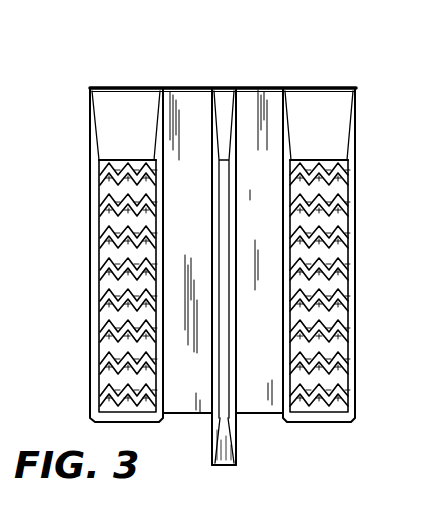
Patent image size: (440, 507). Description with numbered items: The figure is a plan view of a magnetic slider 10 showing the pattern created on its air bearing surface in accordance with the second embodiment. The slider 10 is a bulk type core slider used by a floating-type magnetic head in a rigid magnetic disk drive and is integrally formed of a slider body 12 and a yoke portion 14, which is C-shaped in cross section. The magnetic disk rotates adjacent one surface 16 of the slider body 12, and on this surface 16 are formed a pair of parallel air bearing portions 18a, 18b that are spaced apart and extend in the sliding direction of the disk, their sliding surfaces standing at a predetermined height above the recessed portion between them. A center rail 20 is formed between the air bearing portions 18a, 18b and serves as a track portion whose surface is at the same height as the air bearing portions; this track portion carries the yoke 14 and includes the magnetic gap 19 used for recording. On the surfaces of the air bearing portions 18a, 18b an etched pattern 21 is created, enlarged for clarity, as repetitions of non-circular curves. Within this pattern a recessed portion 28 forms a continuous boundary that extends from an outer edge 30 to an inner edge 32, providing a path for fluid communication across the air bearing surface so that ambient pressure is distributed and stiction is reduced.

The magnetic slider 10 is at (362, 63).
The slider body 12 is at (92, 358).
The yoke portion 14 is at (213, 447).
The surface 16 is at (182, 88).
The air bearing portion 18a is at (99, 223).
The air bearing portion 18b is at (350, 217).
The magnetic gap 19 is at (230, 418).
The center rail 20 is at (226, 189).
The etched pattern 21 is at (100, 258).
The recessed portion 28 is at (100, 292).
The outer edge 30 is at (90, 113).
The inner edge 32 is at (166, 89).